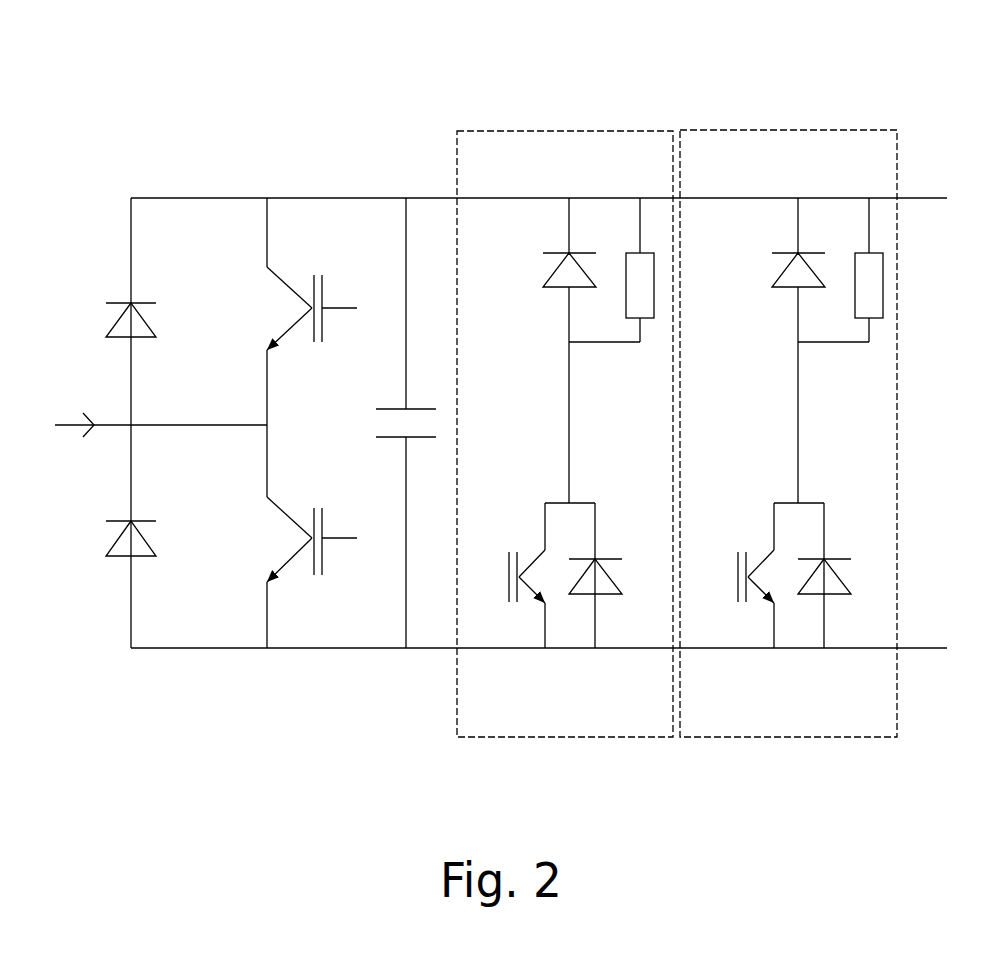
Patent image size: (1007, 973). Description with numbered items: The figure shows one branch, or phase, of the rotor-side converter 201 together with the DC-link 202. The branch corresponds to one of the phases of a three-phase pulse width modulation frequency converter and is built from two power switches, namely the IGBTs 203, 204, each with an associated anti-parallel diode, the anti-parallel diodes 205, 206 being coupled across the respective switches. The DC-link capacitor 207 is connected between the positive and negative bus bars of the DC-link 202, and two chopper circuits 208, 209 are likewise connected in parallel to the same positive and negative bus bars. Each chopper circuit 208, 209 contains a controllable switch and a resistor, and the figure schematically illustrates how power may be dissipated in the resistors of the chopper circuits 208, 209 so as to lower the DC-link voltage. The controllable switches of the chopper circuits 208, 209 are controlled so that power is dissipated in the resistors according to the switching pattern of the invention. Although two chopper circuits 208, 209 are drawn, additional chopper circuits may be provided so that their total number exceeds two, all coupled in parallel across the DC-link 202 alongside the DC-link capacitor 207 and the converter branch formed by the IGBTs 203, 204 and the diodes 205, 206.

The rotor-side converter 201 is at (194, 460).
The DC-link 202 is at (640, 430).
The IGBT 203 is at (272, 310).
The IGBT 204 is at (252, 549).
The anti-parallel diode 205 is at (115, 312).
The anti-parallel diode 206 is at (105, 542).
The DC-link capacitor 207 is at (395, 437).
The chopper circuit 208 is at (558, 130).
The chopper circuit 209 is at (770, 130).